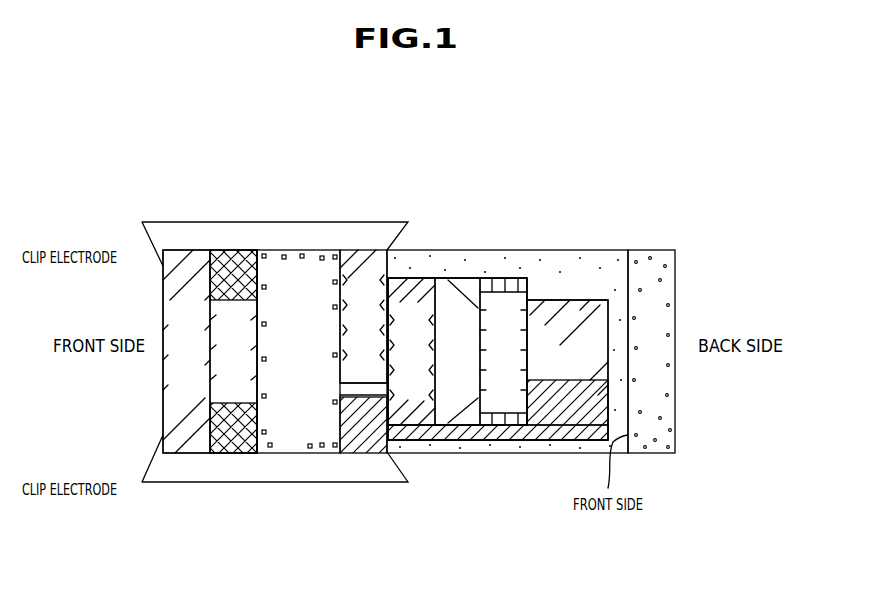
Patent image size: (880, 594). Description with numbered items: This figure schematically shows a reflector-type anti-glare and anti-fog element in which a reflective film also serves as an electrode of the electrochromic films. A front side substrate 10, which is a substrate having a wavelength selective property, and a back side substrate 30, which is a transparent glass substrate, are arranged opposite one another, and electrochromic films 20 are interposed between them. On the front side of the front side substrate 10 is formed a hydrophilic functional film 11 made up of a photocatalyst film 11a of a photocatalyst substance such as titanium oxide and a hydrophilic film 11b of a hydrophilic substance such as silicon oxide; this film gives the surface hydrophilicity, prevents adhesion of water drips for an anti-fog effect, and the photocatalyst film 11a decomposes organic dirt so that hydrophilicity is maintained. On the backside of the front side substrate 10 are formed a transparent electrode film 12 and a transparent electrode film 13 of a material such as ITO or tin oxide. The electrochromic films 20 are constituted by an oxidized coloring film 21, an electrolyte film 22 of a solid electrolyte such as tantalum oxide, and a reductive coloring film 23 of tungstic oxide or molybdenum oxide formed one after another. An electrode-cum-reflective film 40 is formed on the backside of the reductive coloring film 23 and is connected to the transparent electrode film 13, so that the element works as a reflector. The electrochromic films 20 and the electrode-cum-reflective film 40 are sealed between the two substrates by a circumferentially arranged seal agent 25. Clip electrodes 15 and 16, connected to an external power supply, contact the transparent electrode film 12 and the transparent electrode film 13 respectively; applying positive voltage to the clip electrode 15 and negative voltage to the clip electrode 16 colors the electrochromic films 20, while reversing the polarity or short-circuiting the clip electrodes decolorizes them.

The front side substrate 10 is at (298, 248).
The hydrophilic functional film 11 is at (255, 528).
The photocatalyst film 11a is at (190, 443).
The hydrophilic film 11b is at (232, 443).
The transparent electrode film 12 is at (352, 248).
The transparent electrode film 13 is at (368, 440).
The clip electrode 15 is at (144, 233).
The clip electrode 16 is at (144, 468).
The electrochromic films 20 is at (524, 185).
The oxidized coloring film 21 is at (411, 277).
The electrolyte film 22 is at (453, 277).
The reductive coloring film 23 is at (498, 277).
The seal agent 25 is at (605, 272).
The back side substrate 30 is at (653, 437).
The electrode-cum-reflective film 40 is at (558, 300).